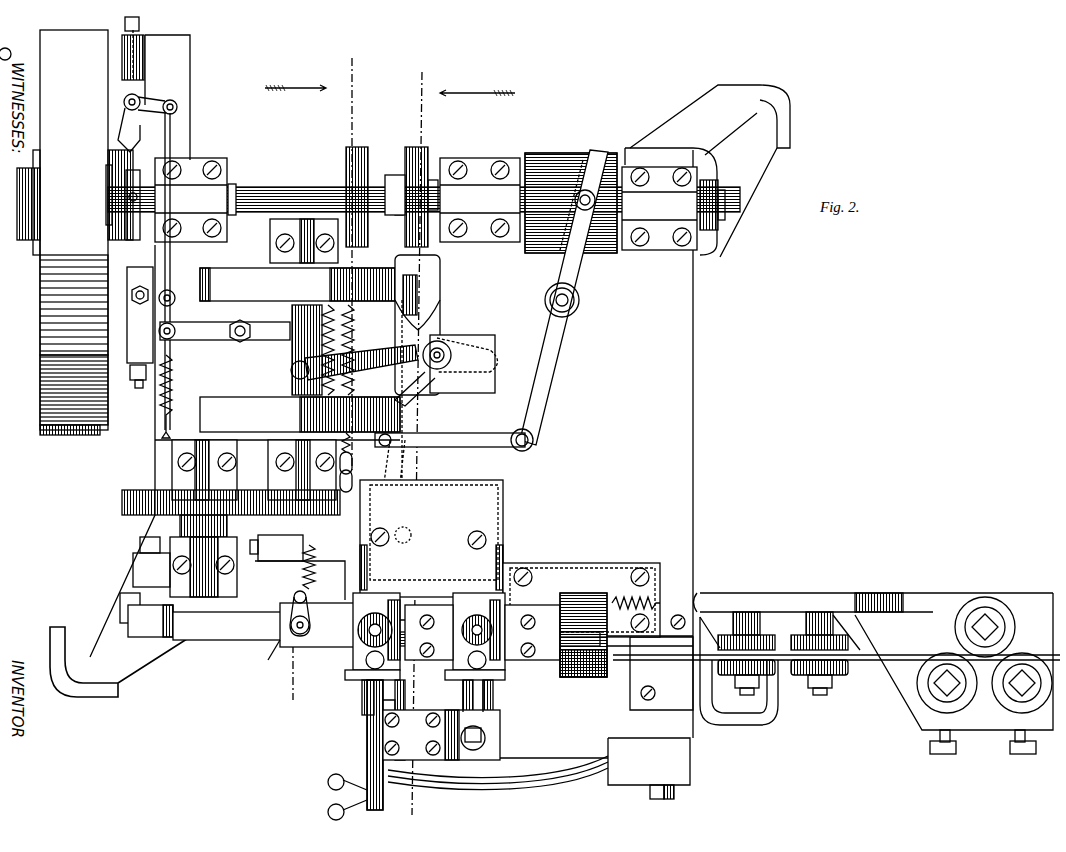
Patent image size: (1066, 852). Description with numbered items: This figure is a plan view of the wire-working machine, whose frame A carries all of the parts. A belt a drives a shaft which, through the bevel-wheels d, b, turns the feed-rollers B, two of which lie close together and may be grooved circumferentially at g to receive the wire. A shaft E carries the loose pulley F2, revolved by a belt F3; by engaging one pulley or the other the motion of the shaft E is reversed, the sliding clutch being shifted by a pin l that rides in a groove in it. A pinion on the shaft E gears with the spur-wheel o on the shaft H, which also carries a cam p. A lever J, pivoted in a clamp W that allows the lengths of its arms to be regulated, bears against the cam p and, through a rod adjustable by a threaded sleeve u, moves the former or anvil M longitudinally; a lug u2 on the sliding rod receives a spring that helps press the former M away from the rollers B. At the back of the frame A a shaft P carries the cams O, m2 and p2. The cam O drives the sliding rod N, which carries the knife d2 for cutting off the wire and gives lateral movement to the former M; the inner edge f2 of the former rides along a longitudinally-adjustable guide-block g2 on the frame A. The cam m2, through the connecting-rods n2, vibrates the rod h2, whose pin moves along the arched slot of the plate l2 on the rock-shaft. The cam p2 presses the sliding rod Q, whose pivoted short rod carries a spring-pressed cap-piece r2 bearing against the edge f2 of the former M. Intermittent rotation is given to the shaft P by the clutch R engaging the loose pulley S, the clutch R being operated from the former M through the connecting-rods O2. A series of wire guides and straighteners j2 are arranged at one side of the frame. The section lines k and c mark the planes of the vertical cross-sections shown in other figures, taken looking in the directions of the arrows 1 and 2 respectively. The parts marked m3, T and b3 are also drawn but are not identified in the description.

The frame A is at (420, 442).
The loose pulley S is at (75, 232).
The shaft P is at (424, 191).
The clutch R is at (154, 128).
The connecting-rods O2 is at (208, 271).
The belts F3 is at (215, 300).
The loose pulley F2 is at (300, 350).
The rod Q is at (362, 262).
The section line c c is at (322, 378).
The section line k k is at (419, 442).
The arrow 1 is at (477, 84).
The arrow 2 is at (295, 79).
The cam p2 is at (346, 150).
The cam O is at (411, 197).
The cam m2 is at (571, 193).
The connecting-rods n2 is at (491, 300).
The knife d2 is at (328, 350).
The pin l is at (342, 358).
The plate l2 is at (446, 364).
The shaft E is at (277, 470).
The circumferential groove g is at (359, 462).
The rod h2 is at (395, 391).
The spur-wheel o is at (221, 502).
The shaft H is at (185, 564).
The clamp W is at (124, 607).
The lever J is at (150, 621).
The cam p is at (251, 634).
The guide-block g2 is at (297, 567).
The inner edge of former f2 is at (321, 567).
The former M is at (318, 609).
The plate m3 is at (269, 660).
The sliding rod N is at (431, 578).
The cap-piece r2 is at (513, 589).
The bevel-wheel b is at (472, 654).
The roller B is at (375, 630).
The bevel-wheel d is at (433, 645).
The belt a is at (626, 645).
The lug u2 is at (690, 600).
The threaded sleeve u is at (954, 661).
The wire guides and straighteners j2 is at (876, 675).
The bar T is at (369, 750).
The leaf spring b3 is at (495, 745).